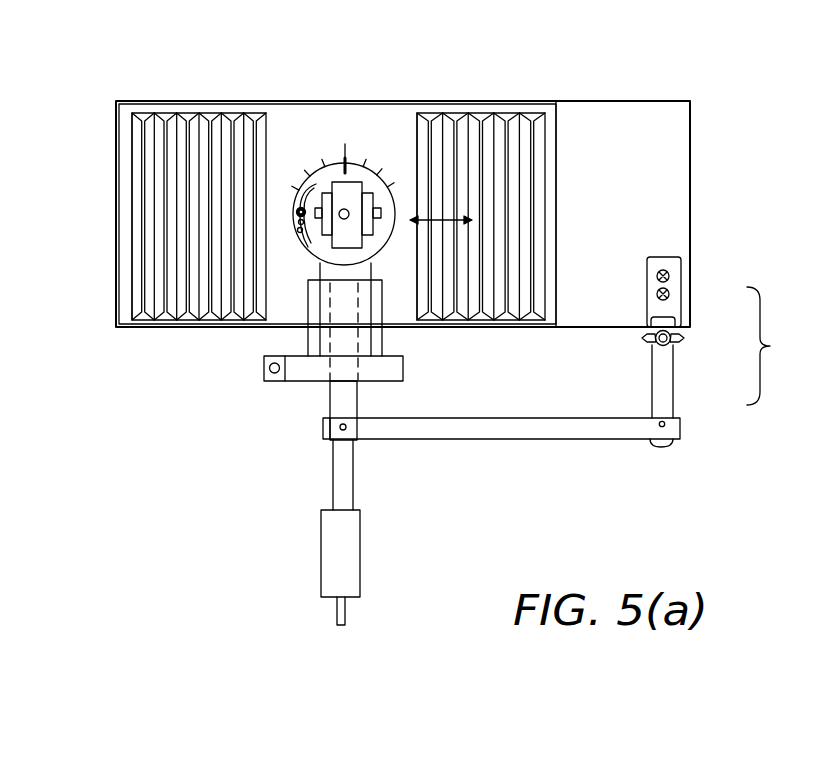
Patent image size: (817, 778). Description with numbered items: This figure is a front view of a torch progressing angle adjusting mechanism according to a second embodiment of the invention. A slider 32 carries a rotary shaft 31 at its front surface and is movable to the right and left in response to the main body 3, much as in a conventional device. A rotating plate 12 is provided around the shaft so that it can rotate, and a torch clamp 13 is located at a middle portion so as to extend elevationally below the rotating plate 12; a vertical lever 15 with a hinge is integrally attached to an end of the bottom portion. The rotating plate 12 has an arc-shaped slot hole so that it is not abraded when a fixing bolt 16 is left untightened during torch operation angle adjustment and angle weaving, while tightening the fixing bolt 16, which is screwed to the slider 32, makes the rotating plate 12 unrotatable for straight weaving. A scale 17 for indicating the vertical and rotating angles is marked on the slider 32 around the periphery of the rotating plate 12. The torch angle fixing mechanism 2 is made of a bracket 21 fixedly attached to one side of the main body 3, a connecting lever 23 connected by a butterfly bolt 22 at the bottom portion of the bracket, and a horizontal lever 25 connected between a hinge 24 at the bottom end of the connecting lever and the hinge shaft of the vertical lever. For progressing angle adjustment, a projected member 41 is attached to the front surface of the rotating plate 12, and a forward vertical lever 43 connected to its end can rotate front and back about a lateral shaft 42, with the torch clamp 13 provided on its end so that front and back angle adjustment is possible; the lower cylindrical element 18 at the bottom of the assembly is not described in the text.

The torch angle fixing mechanism 2 is at (797, 366).
The main body 3 is at (640, 118).
The rotating plate 12 is at (325, 162).
The torch clamp 13 is at (302, 373).
The vertical lever 15 is at (337, 398).
The fixing bolt 16 is at (296, 190).
The scale 17 is at (393, 168).
The actuator cylinder 18 is at (330, 540).
The bracket 21 is at (670, 311).
The butterfly bolt 22 is at (665, 345).
The connecting lever 23 is at (660, 385).
The hinge 24 is at (665, 426).
The horizontal lever 25 is at (500, 439).
The rotary shaft 31 is at (380, 208).
The slider 32 is at (272, 185).
The projected member 41 is at (348, 209).
The lateral shaft 42 is at (395, 198).
The forward vertical lever 43 is at (307, 337).